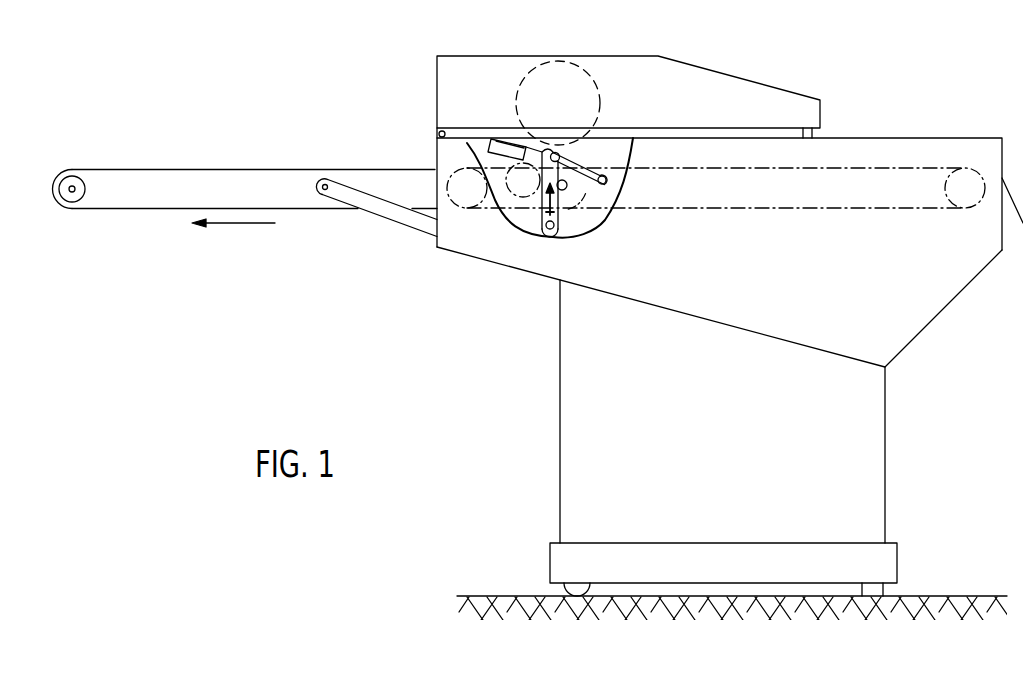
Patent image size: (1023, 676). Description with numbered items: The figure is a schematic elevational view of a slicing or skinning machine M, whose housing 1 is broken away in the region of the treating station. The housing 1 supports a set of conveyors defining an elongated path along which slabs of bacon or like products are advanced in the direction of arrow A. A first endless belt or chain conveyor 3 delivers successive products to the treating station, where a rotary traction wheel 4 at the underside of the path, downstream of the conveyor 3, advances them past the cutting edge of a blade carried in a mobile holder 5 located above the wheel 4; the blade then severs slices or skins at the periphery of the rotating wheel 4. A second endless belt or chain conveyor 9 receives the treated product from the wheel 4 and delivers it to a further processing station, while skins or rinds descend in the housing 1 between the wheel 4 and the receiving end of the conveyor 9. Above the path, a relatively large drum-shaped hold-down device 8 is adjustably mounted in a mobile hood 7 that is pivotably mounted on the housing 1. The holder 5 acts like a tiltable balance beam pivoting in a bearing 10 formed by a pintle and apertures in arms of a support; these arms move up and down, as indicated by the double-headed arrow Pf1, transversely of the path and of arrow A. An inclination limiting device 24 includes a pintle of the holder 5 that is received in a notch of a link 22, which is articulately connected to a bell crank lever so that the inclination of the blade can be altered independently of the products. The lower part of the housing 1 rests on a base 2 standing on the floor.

The housing 1 is at (870, 473).
The housing 2 is at (918, 320).
The first endless belt or chain conveyor 3 is at (857, 167).
The rotary traction member (wheel) 4 is at (507, 198).
The mobile holder 5 is at (437, 147).
The mobile hood 7 is at (486, 65).
The hold-down device 8 is at (563, 63).
The second endless belt or chain conveyor 9 is at (211, 180).
The bearing 10 is at (524, 150).
The link 22 is at (604, 183).
The inclination limiting device 24 is at (567, 152).
The double-headed arrow Pf1 is at (558, 207).
The arrow (direction of product advance) A is at (253, 223).
The machine M is at (923, 127).